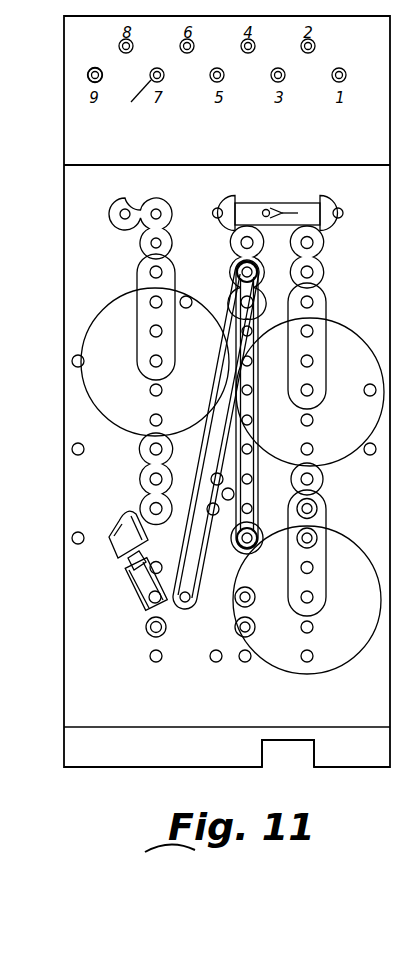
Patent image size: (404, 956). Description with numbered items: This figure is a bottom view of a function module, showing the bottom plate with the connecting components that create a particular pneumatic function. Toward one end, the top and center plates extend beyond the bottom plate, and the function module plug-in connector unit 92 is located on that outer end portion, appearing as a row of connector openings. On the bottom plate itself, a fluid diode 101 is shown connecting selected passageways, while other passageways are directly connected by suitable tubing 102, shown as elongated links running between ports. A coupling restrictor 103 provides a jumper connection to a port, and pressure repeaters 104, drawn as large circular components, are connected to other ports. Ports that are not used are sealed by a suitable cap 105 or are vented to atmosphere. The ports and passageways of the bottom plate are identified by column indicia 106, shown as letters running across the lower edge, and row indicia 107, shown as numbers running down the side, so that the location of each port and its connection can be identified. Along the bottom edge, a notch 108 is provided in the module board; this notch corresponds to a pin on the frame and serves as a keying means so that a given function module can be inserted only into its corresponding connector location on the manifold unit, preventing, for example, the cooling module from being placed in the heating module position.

The function module plug-in connector unit 92 is at (100, 80).
The fluid diode 101 is at (292, 198).
The tubing 102 is at (220, 282).
The coupling restrictor 103 is at (112, 548).
The pressure repeater 104 is at (378, 318).
The cap 105 is at (172, 362).
The column indicia 106 is at (106, 703).
The row indicia 107 is at (84, 629).
The notch 108 is at (313, 756).